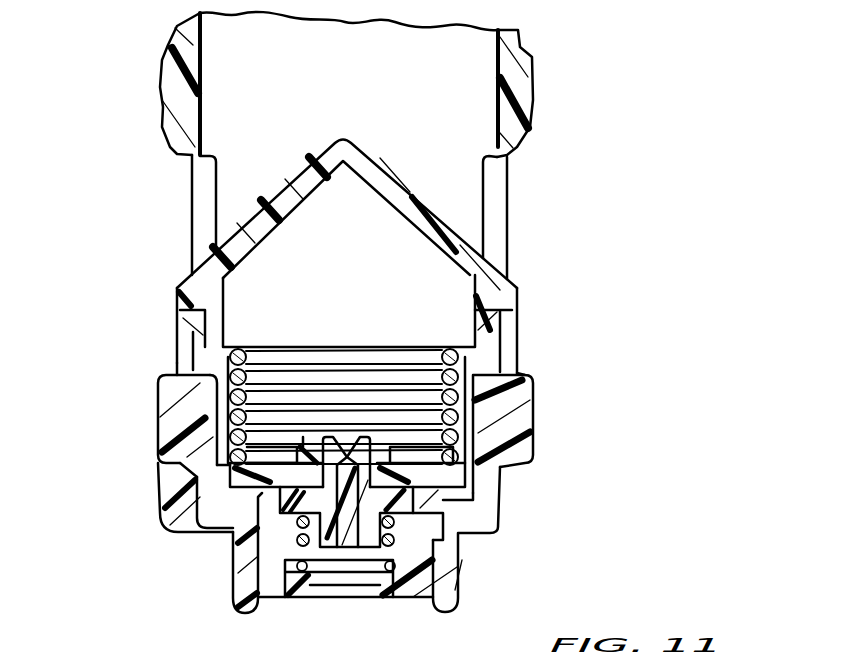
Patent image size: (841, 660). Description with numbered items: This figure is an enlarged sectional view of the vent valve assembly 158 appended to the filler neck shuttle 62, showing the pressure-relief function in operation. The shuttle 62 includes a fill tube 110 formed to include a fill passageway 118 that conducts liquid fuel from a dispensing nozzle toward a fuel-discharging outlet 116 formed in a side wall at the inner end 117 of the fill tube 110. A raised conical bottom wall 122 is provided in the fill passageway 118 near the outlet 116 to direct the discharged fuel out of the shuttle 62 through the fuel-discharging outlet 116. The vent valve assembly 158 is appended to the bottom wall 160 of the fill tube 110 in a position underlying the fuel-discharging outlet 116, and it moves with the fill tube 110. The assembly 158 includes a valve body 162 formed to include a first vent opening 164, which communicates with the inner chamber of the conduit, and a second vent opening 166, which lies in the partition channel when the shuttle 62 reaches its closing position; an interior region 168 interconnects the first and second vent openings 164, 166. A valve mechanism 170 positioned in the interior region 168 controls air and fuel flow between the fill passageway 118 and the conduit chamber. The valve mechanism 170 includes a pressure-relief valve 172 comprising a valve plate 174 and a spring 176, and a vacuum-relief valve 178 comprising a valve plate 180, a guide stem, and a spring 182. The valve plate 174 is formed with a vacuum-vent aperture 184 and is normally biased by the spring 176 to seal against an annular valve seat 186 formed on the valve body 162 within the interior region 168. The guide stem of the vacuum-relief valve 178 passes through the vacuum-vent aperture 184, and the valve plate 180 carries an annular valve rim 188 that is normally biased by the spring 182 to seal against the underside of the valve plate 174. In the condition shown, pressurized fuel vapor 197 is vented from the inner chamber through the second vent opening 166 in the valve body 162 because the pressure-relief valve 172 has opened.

The filler neck shuttle 62 is at (152, 97).
The fill tube 110 is at (537, 92).
The fuel-discharging outlet 116 is at (205, 197).
The inner end 117 is at (540, 265).
The fill passageway 118 is at (444, 75).
The raised conical bottom wall 122 is at (387, 167).
The vent valve assembly 158 is at (550, 498).
The bottom wall 160 is at (465, 322).
The valve body 162 is at (183, 530).
The first vent opening 164 is at (270, 597).
The second vent opening 166 is at (153, 357).
The interior region 168 is at (458, 432).
The valve mechanism 170 is at (280, 533).
The pressure-relief valve 172 is at (226, 407).
The valve plate 174 is at (237, 480).
The spring 176 is at (270, 375).
The vacuum-relief valve 178 is at (413, 593).
The valve plate 180 is at (405, 503).
The spring 182 is at (402, 544).
The vacuum-vent aperture 184 is at (353, 440).
The annular valve seat 186 is at (250, 493).
The annular valve rim 188 is at (250, 497).
The pressurized fuel vapor 197 is at (142, 292).